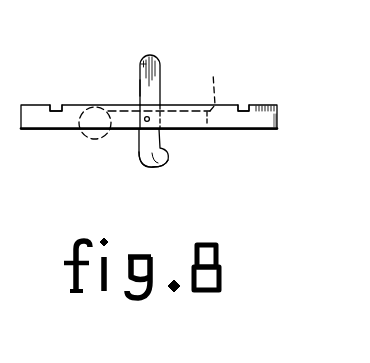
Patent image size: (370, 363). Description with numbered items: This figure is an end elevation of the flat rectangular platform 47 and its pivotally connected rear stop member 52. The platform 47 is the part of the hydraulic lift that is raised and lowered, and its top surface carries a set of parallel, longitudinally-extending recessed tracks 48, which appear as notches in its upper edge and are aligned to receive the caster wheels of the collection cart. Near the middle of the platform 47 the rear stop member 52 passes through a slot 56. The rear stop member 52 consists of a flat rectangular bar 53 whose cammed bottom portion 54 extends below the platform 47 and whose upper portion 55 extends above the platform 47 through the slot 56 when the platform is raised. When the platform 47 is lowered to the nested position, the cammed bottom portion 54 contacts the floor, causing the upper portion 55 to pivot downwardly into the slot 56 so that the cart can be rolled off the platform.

The platform 47 is at (244, 130).
The recessed tracks 48 is at (53, 108).
The rear stop member 52 is at (163, 74).
The flat rectangular bar 53 is at (143, 64).
The cammed bottom portion 54 is at (156, 158).
The upper portion 55 is at (142, 88).
The slot 56 is at (216, 66).